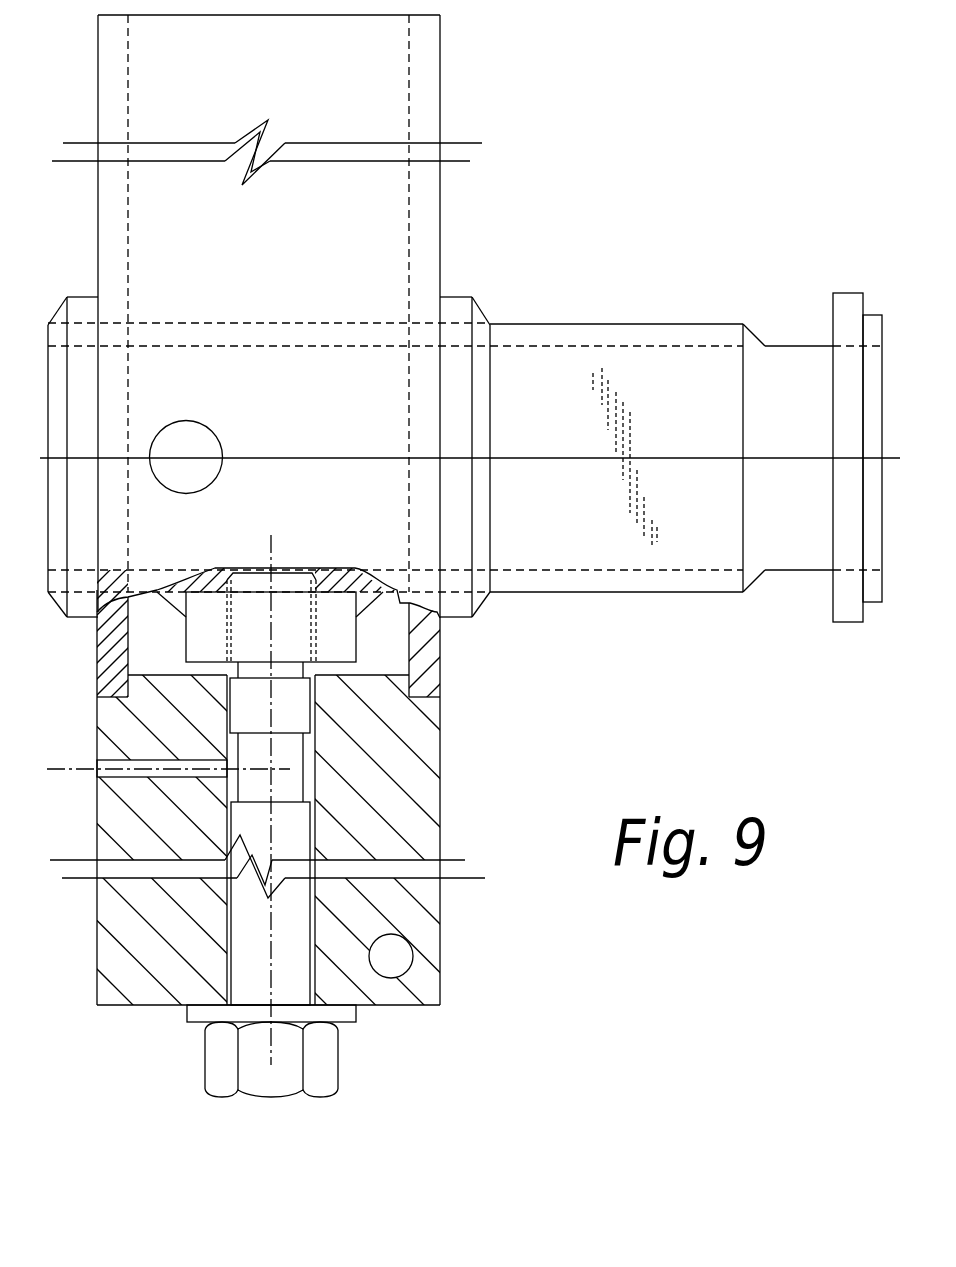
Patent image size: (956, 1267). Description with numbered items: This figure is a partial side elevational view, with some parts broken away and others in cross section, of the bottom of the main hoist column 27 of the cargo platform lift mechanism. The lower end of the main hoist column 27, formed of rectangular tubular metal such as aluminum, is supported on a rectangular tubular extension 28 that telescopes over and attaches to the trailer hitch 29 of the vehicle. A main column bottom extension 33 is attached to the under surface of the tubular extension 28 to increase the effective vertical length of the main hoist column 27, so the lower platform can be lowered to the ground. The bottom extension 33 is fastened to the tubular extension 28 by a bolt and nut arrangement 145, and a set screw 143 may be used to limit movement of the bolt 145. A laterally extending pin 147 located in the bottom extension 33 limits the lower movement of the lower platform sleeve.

The main hoist column 27 is at (427, 228).
The rectangular tubular extension 28 is at (619, 324).
The trailer hitch 29 is at (788, 547).
The main column bottom extension 33 is at (97, 725).
The set screw 143 is at (65, 770).
The bolt and nut arrangement 145 is at (250, 982).
The laterally extending pin 147 is at (402, 957).